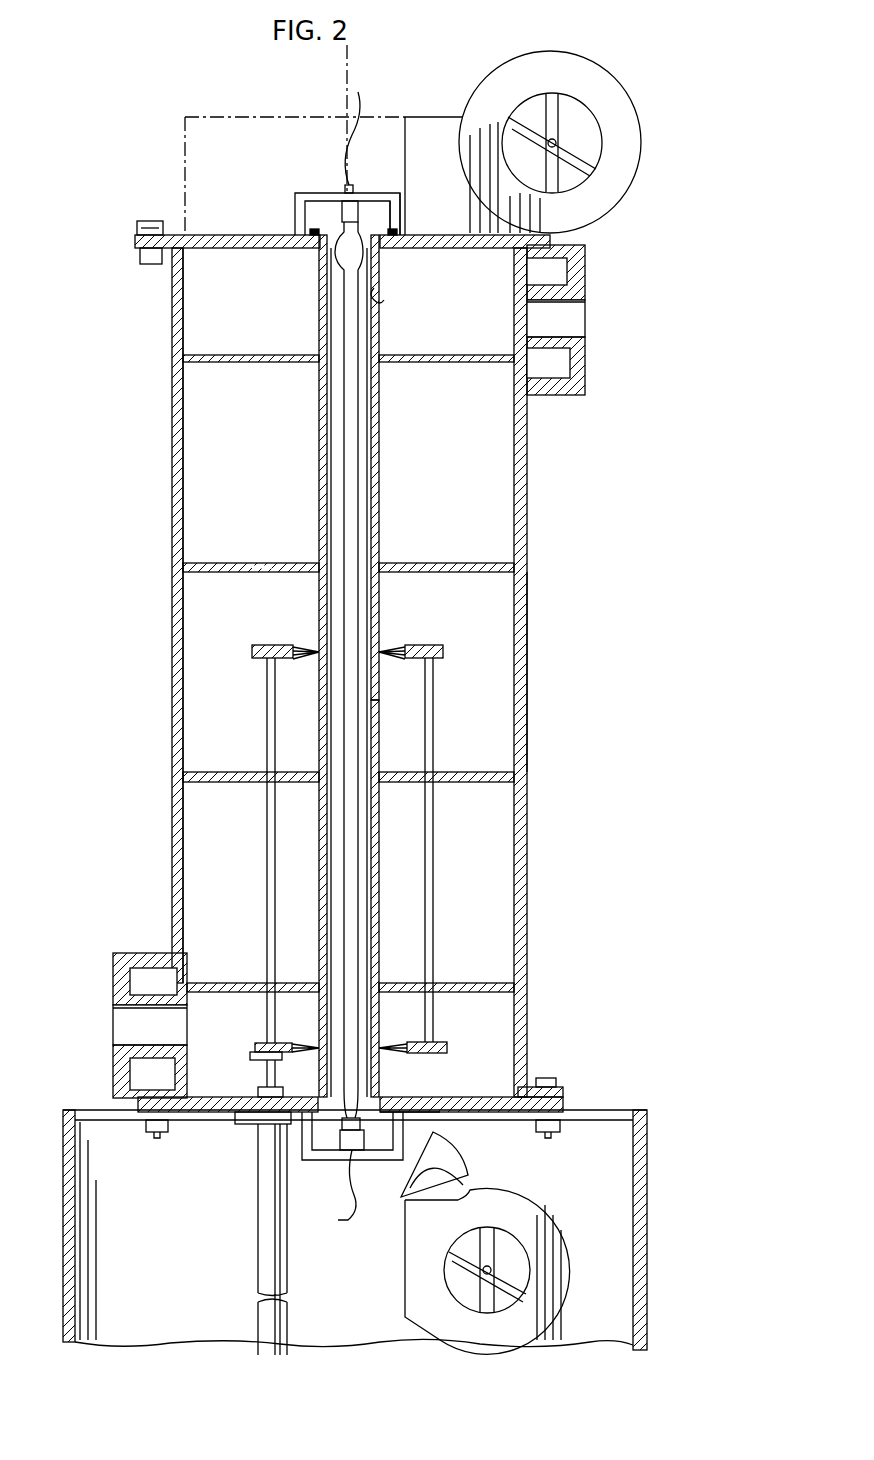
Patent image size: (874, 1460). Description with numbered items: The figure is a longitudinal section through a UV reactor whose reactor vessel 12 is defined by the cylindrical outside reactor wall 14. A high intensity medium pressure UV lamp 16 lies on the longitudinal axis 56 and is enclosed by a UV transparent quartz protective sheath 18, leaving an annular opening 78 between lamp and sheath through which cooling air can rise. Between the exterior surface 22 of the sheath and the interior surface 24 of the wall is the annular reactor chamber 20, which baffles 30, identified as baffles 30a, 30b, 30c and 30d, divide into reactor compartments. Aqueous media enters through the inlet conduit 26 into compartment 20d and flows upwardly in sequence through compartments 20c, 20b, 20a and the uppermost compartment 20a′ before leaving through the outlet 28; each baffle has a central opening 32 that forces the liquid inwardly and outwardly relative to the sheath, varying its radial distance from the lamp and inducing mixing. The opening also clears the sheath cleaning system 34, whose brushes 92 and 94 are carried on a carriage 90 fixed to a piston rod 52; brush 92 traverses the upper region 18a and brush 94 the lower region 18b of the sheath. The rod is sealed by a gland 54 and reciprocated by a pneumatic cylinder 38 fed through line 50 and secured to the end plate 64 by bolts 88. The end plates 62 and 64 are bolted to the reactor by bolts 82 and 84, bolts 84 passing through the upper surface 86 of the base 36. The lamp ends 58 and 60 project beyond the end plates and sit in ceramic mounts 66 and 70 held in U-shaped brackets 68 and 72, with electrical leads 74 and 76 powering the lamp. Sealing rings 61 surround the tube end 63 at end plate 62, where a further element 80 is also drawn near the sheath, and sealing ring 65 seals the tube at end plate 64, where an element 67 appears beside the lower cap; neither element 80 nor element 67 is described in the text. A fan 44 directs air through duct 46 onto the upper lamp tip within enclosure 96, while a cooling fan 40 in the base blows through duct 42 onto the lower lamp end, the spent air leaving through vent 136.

The reactor vessel 12 is at (546, 862).
The outside reactor wall 14 is at (524, 630).
The UV lamp 16 is at (350, 470).
The protective sheath 18 is at (382, 420).
The upper region of sheath 18a is at (320, 476).
The lower region of sheath 18b is at (381, 812).
The annular reactor chamber 20 is at (206, 622).
The uppermost reactor compartment 20a′ is at (488, 314).
The reactor compartment 20a is at (448, 469).
The reactor compartment 20b is at (446, 734).
The reactor compartment 20c is at (446, 882).
The inlet reactor compartment 20d is at (446, 1029).
The exterior surface of protective sheath 22 is at (318, 408).
The interior surface of outside wall 24 is at (513, 682).
The inlet conduit 26 is at (157, 990).
The outlet 28 is at (548, 355).
The baffles 30 is at (488, 562).
The baffle 30a is at (185, 352).
The baffle 30b is at (185, 563).
The baffle 30c is at (185, 773).
The baffle 30d is at (205, 985).
The central opening of baffle 32 is at (262, 552).
The sheath cleaning system 34 is at (398, 645).
The base 36 is at (660, 1286).
The pneumatic cylinder 38 is at (262, 1234).
The cooling fan 40 is at (556, 1250).
The duct 42 is at (468, 1167).
The fan 44 is at (612, 106).
The duct 46 is at (445, 128).
The air pressure line 50 is at (215, 1172).
The piston rod 52 is at (265, 1070).
The gland 54 is at (262, 1090).
The longitudinal axis 56 is at (352, 96).
The upper lamp end 58 is at (335, 250).
The lower lamp end 60 is at (355, 1110).
The sealing rings 61 is at (400, 212).
The upper end plate 62 is at (232, 236).
The end of quartz tube 63 is at (404, 250).
The lower end plate 64 is at (526, 1100).
The sealing ring 65 is at (412, 1128).
The ceramic mount 66 is at (345, 210).
The gasket 67 is at (420, 1096).
The U-shaped bracket 68 is at (408, 122).
The ceramic mount 70 is at (472, 1166).
The U-shaped bracket 72 is at (364, 1150).
The electrical lead 74 is at (363, 98).
The electrical lead 76 is at (358, 1200).
The annular opening 78 is at (370, 546).
The seal ring 80 is at (381, 300).
The bolts 82 is at (138, 248).
The bolts 84 is at (552, 1086).
The support base upper surface 86 is at (615, 1110).
The bolts 88 is at (235, 1122).
The carriage 90 is at (263, 832).
The brush 92 is at (303, 645).
The brush 94 is at (310, 1040).
The enclosure 96 is at (256, 1046).
The vent 136 is at (72, 1128).